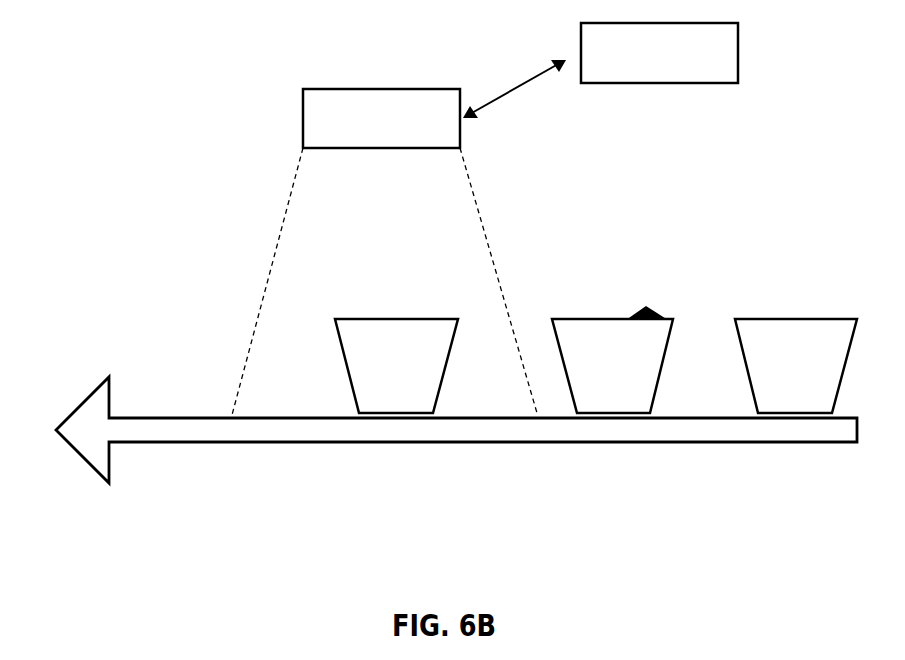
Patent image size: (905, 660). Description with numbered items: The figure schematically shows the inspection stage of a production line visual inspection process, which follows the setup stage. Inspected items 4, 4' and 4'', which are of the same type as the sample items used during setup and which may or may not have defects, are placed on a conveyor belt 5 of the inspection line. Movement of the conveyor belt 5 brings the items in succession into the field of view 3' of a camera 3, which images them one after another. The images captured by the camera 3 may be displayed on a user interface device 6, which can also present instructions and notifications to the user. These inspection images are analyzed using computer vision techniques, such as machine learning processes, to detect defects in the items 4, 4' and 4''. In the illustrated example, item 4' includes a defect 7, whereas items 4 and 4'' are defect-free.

The camera 3 is at (381, 118).
The field of view 3' is at (354, 281).
The inspected item 4 is at (396, 366).
The inspected item 4' is at (612, 366).
The inspected item 4'' is at (796, 366).
The conveyor belt 5 is at (305, 430).
The user interface device 6 is at (651, 71).
The defect 7 is at (652, 316).